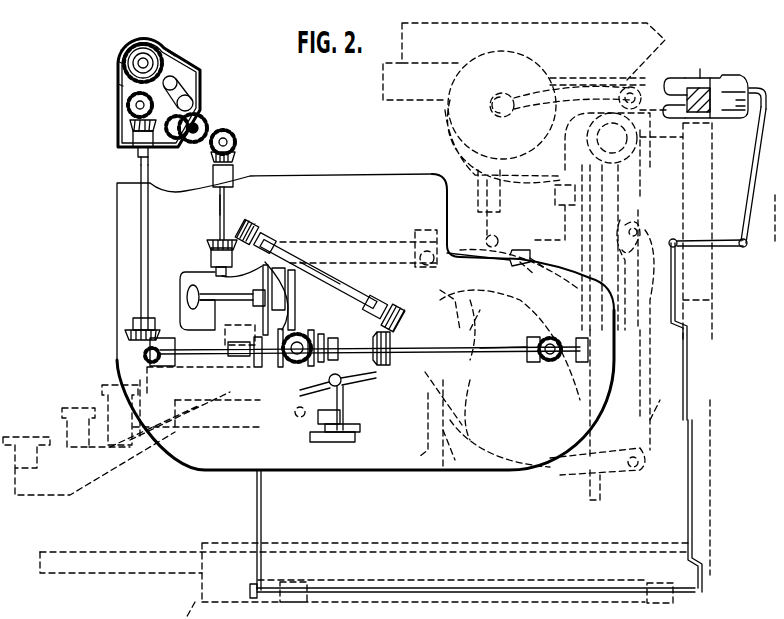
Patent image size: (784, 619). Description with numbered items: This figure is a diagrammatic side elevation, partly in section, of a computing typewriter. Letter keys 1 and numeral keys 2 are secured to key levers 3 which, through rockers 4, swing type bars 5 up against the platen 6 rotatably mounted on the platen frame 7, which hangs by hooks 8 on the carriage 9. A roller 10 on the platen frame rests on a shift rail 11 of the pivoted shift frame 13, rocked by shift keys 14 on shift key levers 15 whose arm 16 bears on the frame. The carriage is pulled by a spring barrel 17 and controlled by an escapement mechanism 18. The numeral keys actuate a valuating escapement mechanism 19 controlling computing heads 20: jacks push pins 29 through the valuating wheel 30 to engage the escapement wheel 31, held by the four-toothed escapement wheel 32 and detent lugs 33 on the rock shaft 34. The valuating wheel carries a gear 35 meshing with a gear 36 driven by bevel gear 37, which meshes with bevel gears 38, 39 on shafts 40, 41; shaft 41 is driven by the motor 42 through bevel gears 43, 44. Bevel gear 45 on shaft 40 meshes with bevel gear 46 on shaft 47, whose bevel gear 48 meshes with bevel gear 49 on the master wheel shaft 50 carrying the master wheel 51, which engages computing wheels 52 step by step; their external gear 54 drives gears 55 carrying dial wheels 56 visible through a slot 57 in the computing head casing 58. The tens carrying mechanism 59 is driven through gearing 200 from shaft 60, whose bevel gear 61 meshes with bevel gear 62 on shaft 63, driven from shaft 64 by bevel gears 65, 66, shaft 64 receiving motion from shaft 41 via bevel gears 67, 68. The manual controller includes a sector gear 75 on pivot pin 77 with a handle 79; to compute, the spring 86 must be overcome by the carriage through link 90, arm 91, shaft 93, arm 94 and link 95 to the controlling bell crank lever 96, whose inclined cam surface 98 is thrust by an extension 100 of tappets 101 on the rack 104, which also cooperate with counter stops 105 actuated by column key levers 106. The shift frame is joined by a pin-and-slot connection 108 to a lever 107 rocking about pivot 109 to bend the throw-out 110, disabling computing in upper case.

The letter keys 1 is at (100, 399).
The numeral keys 2 is at (170, 372).
The key levers 3 is at (198, 428).
The rockers 4 is at (448, 411).
The type bars 5 is at (428, 318).
The platen 6 is at (442, 108).
The platen frame 7 is at (462, 160).
The hooks 8 is at (572, 101).
The carriage 9 is at (640, 88).
The roller 10 is at (501, 202).
The shift rail 11 is at (499, 238).
The shift frame 13 is at (549, 233).
The shift keys 14 is at (20, 437).
The shift key levers 15 is at (52, 494).
The arm 16 is at (630, 445).
The spring barrel 17 is at (624, 223).
The escapement mechanism 18 is at (557, 199).
The valuating escapement mechanism 19 is at (345, 354).
The computing heads 20 is at (200, 85).
The pins 29 is at (320, 420).
The valuating wheel 30 is at (196, 406).
The escapement wheel 31 is at (346, 400).
The four-toothed escapement wheel 32 is at (360, 378).
The detent lugs 33 is at (360, 427).
The rock shaft 34 is at (332, 448).
The gear 35 is at (300, 420).
The gear 36 is at (313, 332).
The bevel gear 37 is at (298, 333).
The bevel gear 38 is at (249, 354).
The bevel gear 39 is at (332, 338).
The shaft 40 is at (228, 356).
The shaft 41 is at (497, 354).
The motor 42 is at (655, 430).
The bevel gear 43 is at (548, 338).
The bevel gear 44 is at (558, 362).
The bevel gear 45 is at (152, 362).
The bevel gear 46 is at (125, 334).
The shaft 47 is at (149, 262).
The bevel gear 48 is at (124, 142).
The bevel gear 49 is at (130, 126).
The master wheel shaft 50 is at (128, 105).
The master wheel 51 is at (118, 84).
The computing wheels 52 is at (119, 62).
The external gear 54 is at (190, 84).
The gears 55 is at (121, 50).
The dial wheels 56 is at (147, 53).
The slot 57 is at (140, 46).
The computing head casing 58 is at (170, 55).
The tens carrying mechanism 59 is at (193, 144).
The shaft 60 is at (213, 178).
The bevel gear 61 is at (231, 142).
The bevel gear 62 is at (235, 157).
The shaft 63 is at (225, 201).
The shaft 64 is at (320, 271).
The bevel gear 65 is at (256, 228).
The bevel gear 66 is at (207, 243).
The bevel gear 67 is at (391, 358).
The bevel gear 68 is at (390, 305).
The sector gear 75 is at (263, 277).
The pivot pin 77 is at (211, 256).
The handle 79 is at (180, 295).
The spring 86 is at (225, 332).
The link 90 is at (257, 486).
The arm 91 is at (250, 590).
The shaft 93 is at (405, 586).
The arm 94 is at (700, 589).
The link 95 is at (671, 298).
The controlling bell crank lever 96 is at (723, 177).
The inclined cam surface 98 is at (759, 89).
The extension 100 is at (737, 78).
The tappets 101 is at (711, 64).
The rack 104 is at (690, 88).
The counter stops 105 is at (710, 300).
The column key levers 106 is at (105, 557).
The lever 107 is at (352, 242).
The pin-and-slot connection 108 is at (532, 259).
The pivot 109 is at (422, 252).
The throw-out 110 is at (290, 256).
The gearing 200 is at (229, 133).